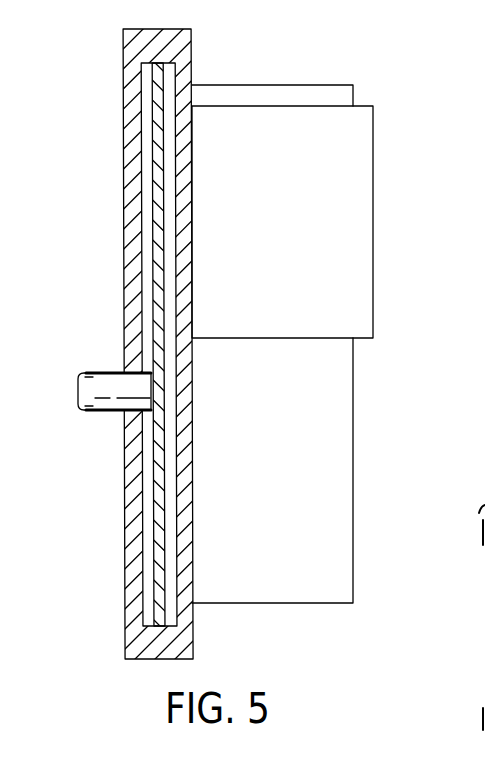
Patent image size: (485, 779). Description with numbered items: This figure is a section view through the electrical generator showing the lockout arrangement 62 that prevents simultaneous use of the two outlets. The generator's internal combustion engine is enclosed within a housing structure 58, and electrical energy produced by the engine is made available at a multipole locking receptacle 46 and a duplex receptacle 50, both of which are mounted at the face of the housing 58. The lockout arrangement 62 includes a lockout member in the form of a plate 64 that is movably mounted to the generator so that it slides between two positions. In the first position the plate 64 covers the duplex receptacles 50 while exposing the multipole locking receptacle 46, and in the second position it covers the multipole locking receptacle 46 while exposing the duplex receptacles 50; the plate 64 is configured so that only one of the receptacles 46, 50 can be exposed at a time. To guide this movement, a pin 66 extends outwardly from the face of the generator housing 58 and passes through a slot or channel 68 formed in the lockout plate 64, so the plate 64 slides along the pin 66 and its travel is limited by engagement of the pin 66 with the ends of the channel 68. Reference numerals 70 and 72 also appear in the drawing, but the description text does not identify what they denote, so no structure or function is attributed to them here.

The multipole locking receptacle 46 is at (281, 223).
The duplex receptacle 50 is at (364, 407).
The housing structure 58 is at (125, 627).
The lockout arrangement 62 is at (89, 93).
The lockout plate 64 is at (160, 487).
The pin 66 is at (78, 392).
The channel 68 is at (120, 412).
The component 70 is at (464, 560).
The component 72 is at (484, 628).